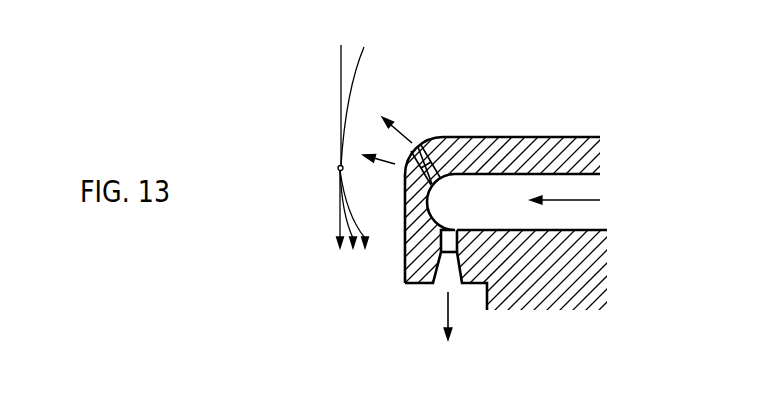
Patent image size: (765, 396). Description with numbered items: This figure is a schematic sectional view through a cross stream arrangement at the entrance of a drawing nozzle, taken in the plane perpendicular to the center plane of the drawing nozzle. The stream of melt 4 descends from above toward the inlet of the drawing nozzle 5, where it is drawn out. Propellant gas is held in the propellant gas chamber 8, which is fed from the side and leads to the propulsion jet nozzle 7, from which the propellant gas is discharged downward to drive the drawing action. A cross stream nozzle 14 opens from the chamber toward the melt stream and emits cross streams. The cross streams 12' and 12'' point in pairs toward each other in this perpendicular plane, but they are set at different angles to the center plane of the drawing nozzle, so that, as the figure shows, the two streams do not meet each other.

The stream of melt 4 is at (355, 61).
The inlet of the drawing nozzle 5 is at (390, 229).
The propulsion jet nozzle 7 is at (443, 287).
The propellant gas chamber 8 is at (583, 187).
The cross stream 12' is at (410, 114).
The cross stream 12'' is at (375, 174).
The cross stream nozzle 14 is at (420, 148).